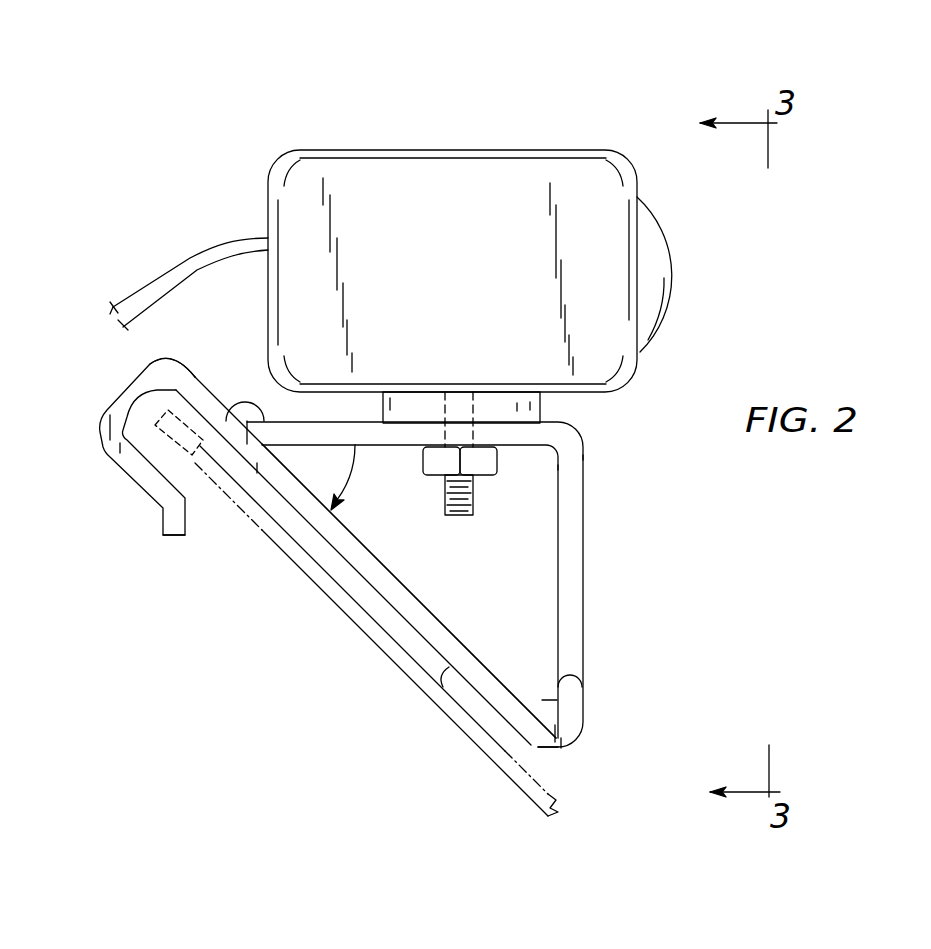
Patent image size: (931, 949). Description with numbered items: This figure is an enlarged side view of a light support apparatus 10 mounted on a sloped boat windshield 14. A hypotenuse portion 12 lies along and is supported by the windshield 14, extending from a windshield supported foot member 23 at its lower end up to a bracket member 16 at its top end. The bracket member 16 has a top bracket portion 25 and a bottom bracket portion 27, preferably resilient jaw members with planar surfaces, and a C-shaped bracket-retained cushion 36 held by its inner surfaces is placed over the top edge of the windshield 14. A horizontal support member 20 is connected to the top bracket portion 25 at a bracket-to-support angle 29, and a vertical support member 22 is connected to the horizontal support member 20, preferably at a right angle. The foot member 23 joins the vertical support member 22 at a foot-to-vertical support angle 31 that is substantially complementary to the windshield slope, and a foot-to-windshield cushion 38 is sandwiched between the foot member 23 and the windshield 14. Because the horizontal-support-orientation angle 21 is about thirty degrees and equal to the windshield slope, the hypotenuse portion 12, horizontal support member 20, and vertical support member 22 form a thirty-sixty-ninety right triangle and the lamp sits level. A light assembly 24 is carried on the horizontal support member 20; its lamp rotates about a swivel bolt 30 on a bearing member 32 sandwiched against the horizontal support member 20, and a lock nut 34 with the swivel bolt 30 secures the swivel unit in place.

The light support apparatus 10 is at (220, 183).
The hypotenuse portion 12 is at (432, 612).
The windshield 14 is at (366, 624).
The bracket member 16 is at (115, 460).
The horizontal support member 20 is at (302, 424).
The horizontal-support-orientation angle 21 is at (336, 506).
The vertical support member 22 is at (584, 604).
The windshield supported foot member 23 is at (537, 700).
The light assembly 24 is at (462, 152).
The top bracket portion 25 is at (152, 366).
The bottom bracket portion 27 is at (148, 472).
The bracket-to-support angle 29 is at (230, 400).
The swivel bolt 30 is at (465, 515).
The foot-to-vertical support angle 31 is at (584, 685).
The bearing member 32 is at (542, 410).
The lock nut 34 is at (497, 462).
The bracket-retained cushion 36 is at (182, 470).
The foot-to-windshield cushion 38 is at (537, 752).